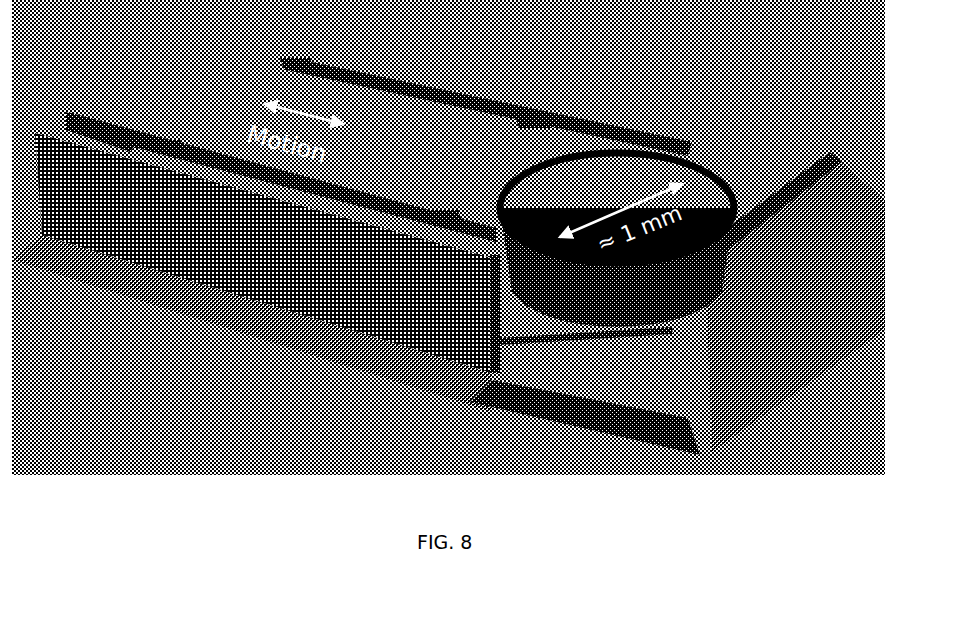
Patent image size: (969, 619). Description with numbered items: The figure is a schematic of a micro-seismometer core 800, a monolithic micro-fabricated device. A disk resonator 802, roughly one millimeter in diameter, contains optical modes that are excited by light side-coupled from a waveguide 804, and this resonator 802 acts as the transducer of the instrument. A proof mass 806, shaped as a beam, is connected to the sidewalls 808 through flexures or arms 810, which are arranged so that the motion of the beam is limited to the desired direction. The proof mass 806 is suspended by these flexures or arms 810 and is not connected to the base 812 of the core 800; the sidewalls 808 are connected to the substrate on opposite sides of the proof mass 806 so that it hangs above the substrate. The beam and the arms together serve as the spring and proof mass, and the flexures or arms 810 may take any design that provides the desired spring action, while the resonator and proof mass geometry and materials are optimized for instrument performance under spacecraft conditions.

The micro-seismometer core 800 is at (92, 62).
The disk resonator 802 is at (690, 148).
The waveguide 804 is at (664, 336).
The proof mass 806 is at (425, 131).
The sidewalls 808 is at (267, 253).
The flexures or arms 810 is at (275, 62).
The base 812 is at (594, 372).